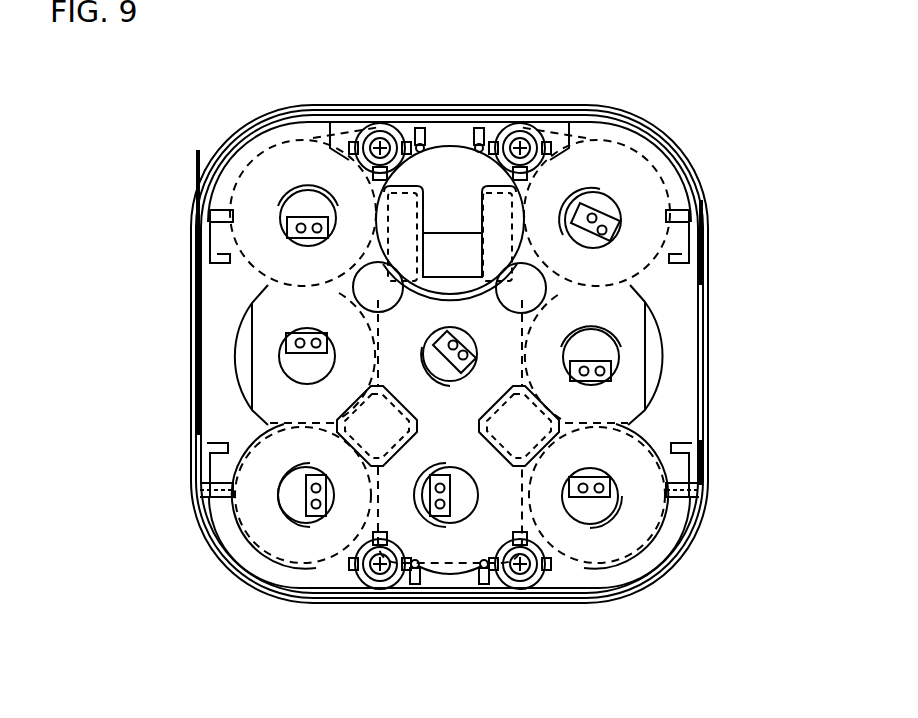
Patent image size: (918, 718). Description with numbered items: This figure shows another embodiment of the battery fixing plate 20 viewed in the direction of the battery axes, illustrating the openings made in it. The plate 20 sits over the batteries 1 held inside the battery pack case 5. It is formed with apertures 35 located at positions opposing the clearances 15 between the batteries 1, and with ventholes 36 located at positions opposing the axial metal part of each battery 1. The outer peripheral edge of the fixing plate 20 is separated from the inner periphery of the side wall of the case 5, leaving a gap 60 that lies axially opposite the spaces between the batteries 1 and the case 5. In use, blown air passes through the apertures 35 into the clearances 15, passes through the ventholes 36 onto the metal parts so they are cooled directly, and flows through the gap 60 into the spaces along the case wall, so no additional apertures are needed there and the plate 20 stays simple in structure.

The battery 1 is at (445, 157).
The battery pack case 5 is at (692, 262).
The clearances between the batteries 15 is at (375, 247).
The battery fixing plate 20 is at (668, 478).
The apertures 35 is at (528, 283).
The ventholes 36 is at (293, 197).
The gap 60 is at (672, 318).